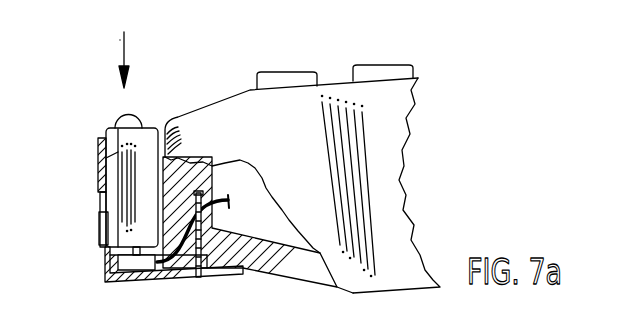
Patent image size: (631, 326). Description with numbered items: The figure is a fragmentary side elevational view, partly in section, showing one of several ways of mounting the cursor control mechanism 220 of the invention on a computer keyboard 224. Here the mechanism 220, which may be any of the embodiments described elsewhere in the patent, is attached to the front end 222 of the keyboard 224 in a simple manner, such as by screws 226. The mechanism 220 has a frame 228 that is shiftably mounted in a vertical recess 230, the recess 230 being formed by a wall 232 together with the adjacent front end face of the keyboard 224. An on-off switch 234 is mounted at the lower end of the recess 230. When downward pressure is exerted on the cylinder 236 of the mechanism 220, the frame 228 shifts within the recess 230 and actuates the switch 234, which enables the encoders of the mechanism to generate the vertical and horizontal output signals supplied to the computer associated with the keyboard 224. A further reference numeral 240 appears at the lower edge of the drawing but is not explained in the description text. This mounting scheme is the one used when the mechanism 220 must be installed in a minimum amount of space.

The mechanism 220 is at (100, 108).
The front end 222 is at (232, 90).
The keyboard 224 is at (338, 74).
The screws 226 is at (203, 277).
The frame 228 is at (106, 248).
The vertical recess 230 is at (102, 150).
The wall 232 is at (99, 183).
The on-off switch 234 is at (135, 270).
The cylinder 236 is at (140, 117).
The floor 240 is at (325, 309).